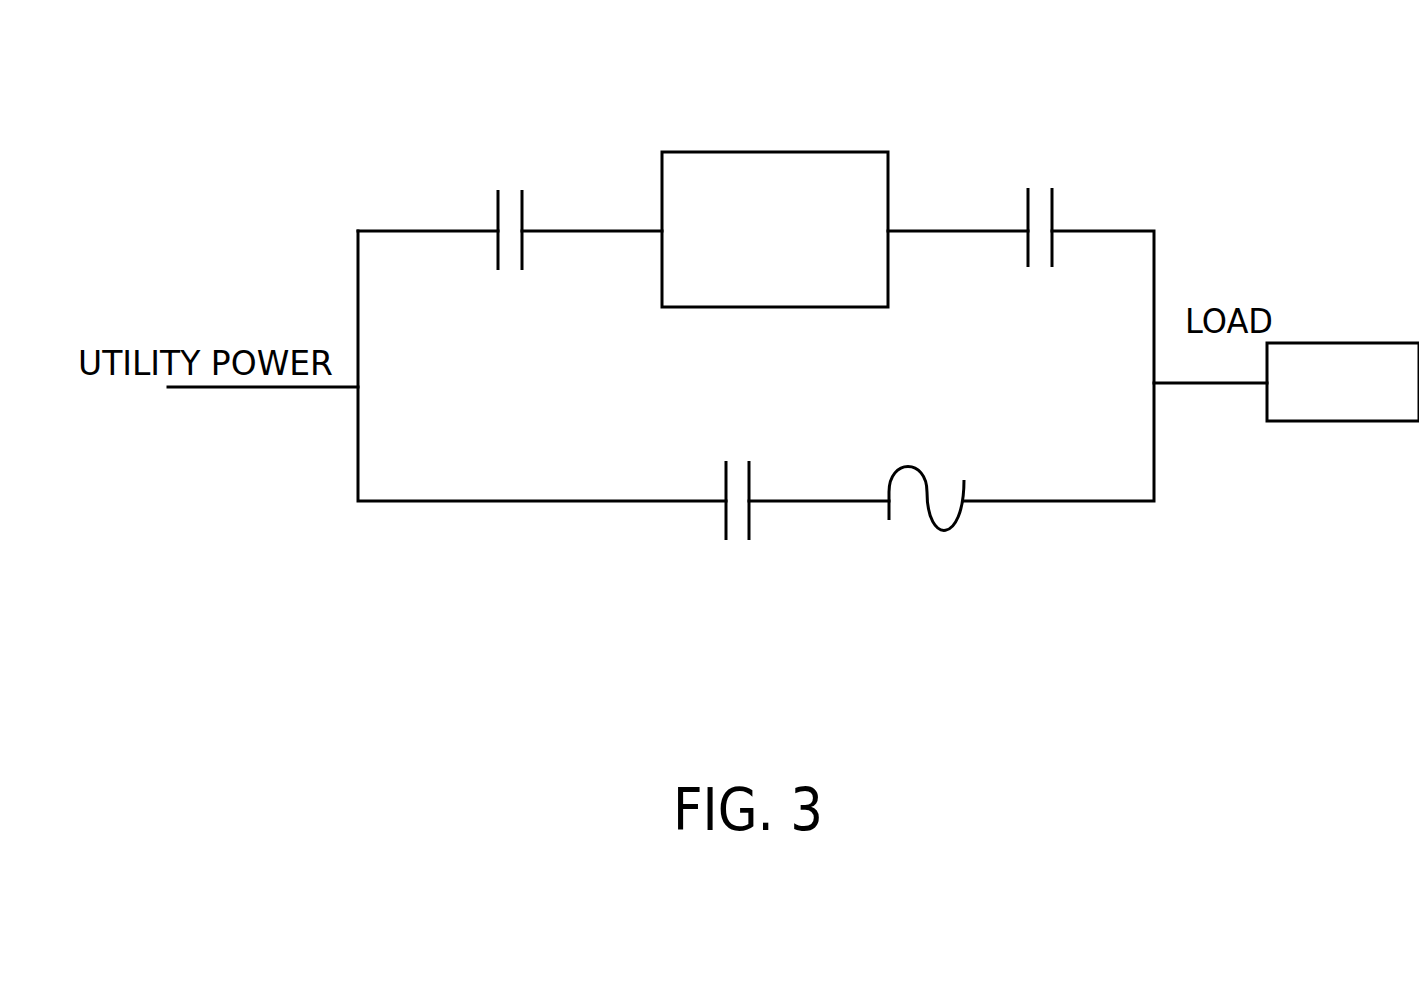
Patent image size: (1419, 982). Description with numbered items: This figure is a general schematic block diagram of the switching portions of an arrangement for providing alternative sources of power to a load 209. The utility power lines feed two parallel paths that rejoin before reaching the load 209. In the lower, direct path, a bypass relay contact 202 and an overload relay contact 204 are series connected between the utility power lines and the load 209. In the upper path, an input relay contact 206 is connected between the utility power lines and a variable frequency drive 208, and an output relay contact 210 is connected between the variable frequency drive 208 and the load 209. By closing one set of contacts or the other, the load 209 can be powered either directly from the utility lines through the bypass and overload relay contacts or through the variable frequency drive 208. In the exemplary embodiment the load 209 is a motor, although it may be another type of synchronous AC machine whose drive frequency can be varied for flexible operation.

The bypass relay contact 202 is at (726, 530).
The overload relay contact 204 is at (918, 468).
The input relay contact 206 is at (522, 200).
The variable frequency drive 208 is at (784, 152).
The load 209 is at (1337, 421).
The output relay contact 210 is at (1052, 200).